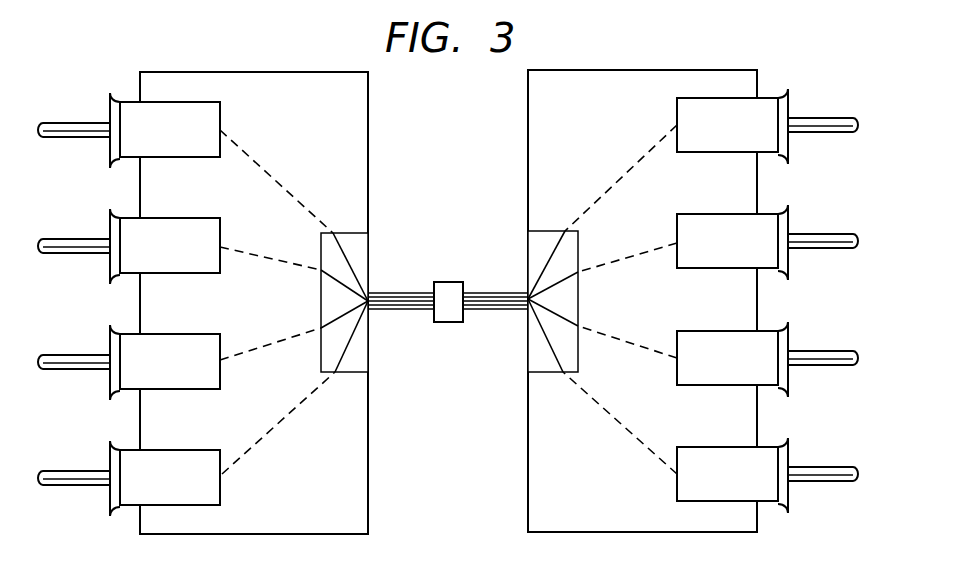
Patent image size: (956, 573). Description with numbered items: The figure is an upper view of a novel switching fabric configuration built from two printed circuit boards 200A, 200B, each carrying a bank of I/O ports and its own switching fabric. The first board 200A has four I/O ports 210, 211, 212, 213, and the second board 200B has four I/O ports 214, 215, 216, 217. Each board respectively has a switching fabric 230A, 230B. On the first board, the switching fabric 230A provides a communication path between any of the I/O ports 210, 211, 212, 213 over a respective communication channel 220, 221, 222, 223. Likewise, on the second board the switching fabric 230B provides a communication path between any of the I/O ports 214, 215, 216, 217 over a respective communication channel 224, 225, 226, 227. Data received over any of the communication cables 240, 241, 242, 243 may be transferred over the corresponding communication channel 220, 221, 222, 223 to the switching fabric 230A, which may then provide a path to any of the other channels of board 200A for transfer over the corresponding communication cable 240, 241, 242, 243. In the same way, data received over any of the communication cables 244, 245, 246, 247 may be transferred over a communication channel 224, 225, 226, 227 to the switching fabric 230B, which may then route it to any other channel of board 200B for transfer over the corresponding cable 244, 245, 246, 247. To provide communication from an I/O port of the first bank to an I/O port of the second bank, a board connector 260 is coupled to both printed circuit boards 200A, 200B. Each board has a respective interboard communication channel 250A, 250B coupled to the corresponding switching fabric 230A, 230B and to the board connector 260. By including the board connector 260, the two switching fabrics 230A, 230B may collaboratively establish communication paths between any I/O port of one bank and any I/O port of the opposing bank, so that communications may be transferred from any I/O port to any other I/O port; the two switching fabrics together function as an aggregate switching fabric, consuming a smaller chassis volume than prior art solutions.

The printed circuit board 200A is at (242, 72).
The printed circuit board 200B is at (654, 70).
The I/O port 210 is at (133, 107).
The I/O port 211 is at (181, 222).
The I/O port 212 is at (182, 388).
The I/O port 213 is at (133, 503).
The I/O port 214 is at (766, 101).
The I/O port 215 is at (717, 218).
The I/O port 216 is at (720, 386).
The I/O port 217 is at (768, 502).
The communication channel 220 is at (275, 178).
The communication channel 221 is at (262, 254).
The communication channel 222 is at (263, 350).
The communication channel 223 is at (280, 425).
The communication channel 224 is at (619, 178).
The communication channel 225 is at (633, 253).
The communication channel 226 is at (633, 344).
The communication channel 227 is at (616, 418).
The switching fabric 230A is at (320, 303).
The switching fabric 230B is at (580, 300).
The communication cable 240 is at (70, 127).
The communication cable 241 is at (71, 244).
The communication cable 242 is at (70, 367).
The communication cable 243 is at (72, 483).
The communication cable 244 is at (826, 125).
The communication cable 245 is at (826, 241).
The communication cable 246 is at (828, 366).
The communication cable 247 is at (828, 481).
The interboard communication channel 250A is at (408, 286).
The interboard communication channel 250B is at (490, 321).
The board connector 260 is at (447, 288).